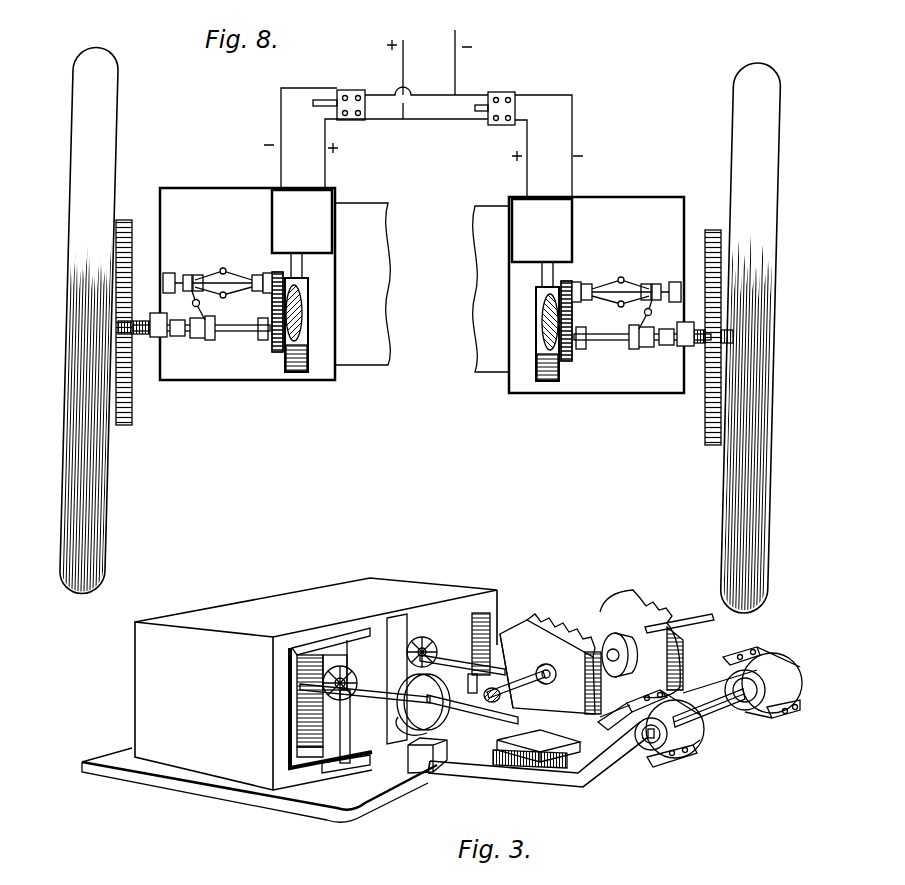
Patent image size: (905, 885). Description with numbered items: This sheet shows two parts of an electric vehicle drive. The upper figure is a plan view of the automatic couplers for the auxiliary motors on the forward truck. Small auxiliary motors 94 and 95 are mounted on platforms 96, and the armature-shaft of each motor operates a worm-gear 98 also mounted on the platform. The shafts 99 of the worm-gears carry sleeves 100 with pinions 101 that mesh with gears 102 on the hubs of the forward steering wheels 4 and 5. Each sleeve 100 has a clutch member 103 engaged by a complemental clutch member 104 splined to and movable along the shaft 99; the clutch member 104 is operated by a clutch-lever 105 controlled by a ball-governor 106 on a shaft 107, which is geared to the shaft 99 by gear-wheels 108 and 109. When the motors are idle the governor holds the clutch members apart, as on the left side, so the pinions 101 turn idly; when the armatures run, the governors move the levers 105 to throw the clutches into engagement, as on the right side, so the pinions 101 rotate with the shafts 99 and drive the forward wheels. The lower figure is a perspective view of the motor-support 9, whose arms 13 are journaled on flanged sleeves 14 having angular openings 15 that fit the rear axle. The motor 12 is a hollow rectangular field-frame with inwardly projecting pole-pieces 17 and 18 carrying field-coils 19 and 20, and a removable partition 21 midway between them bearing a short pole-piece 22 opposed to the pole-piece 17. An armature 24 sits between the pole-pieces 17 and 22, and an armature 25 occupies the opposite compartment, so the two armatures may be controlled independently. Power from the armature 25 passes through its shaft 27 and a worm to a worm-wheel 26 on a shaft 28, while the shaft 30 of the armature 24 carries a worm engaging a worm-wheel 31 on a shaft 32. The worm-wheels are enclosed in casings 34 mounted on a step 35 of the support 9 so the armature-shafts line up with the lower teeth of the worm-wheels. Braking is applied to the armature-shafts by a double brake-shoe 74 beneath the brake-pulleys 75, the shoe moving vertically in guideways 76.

In FIG. 8, the forward steering wheel 4 is at (62, 472).
In FIG. 8, the forward steering wheel 5 is at (778, 470).
In FIG. 8, the auxiliary motor 94 is at (320, 205).
In FIG. 8, the auxiliary motor 95 is at (577, 221).
In FIG. 8, the platform 96 is at (232, 373).
In FIG. 8, the worm-gear 98 is at (303, 312).
In FIG. 8, the worm-gear shaft 99 is at (239, 333).
In FIG. 8, the sleeve 100 is at (147, 340).
In FIG. 8, the pinion 101 is at (115, 335).
In FIG. 8, the wheel gear 102 is at (132, 422).
In FIG. 8, the clutch member 103 is at (201, 339).
In FIG. 8, the complemental clutch member 104 is at (213, 329).
In FIG. 8, the clutch-lever 105 is at (192, 304).
In FIG. 8, the ball-governor 106 is at (231, 281).
In FIG. 8, the governor shaft 107 is at (214, 285).
In FIG. 8, the gear-wheel 108 is at (278, 284).
In FIG. 8, the gear-wheel 109 is at (276, 355).
In FIG. 3, the motor-support 9 is at (362, 809).
In FIG. 3, the motor 12 is at (316, 679).
In FIG. 3, the support arm 13 is at (790, 667).
In FIG. 3, the flanged sleeve 14 is at (748, 708).
In FIG. 3, the angular opening 15 is at (633, 760).
In FIG. 3, the pole-piece 17 is at (330, 665).
In FIG. 3, the pole-piece 18 is at (428, 637).
In FIG. 3, the field-coil 19 is at (300, 707).
In FIG. 3, the field-coil 20 is at (490, 614).
In FIG. 3, the removable partition 21 is at (350, 703).
In FIG. 3, the short pole-piece 22 is at (347, 668).
In FIG. 3, the armature 24 is at (322, 677).
In FIG. 3, the armature 25 is at (438, 648).
In FIG. 3, the worm-wheel 26 is at (660, 613).
In FIG. 3, the armature shaft 27 is at (502, 637).
In FIG. 3, the shaft 28 is at (705, 633).
In FIG. 3, the armature shaft 30 is at (486, 716).
In FIG. 3, the worm-wheel 31 is at (563, 622).
In FIG. 3, the shaft 32 is at (547, 685).
In FIG. 3, the casing 34 is at (550, 667).
In FIG. 3, the step 35 is at (513, 777).
In FIG. 3, the double brake-shoe 74 is at (408, 735).
In FIG. 3, the brake-pulley 75 is at (410, 690).
In FIG. 3, the guideway 76 is at (432, 773).